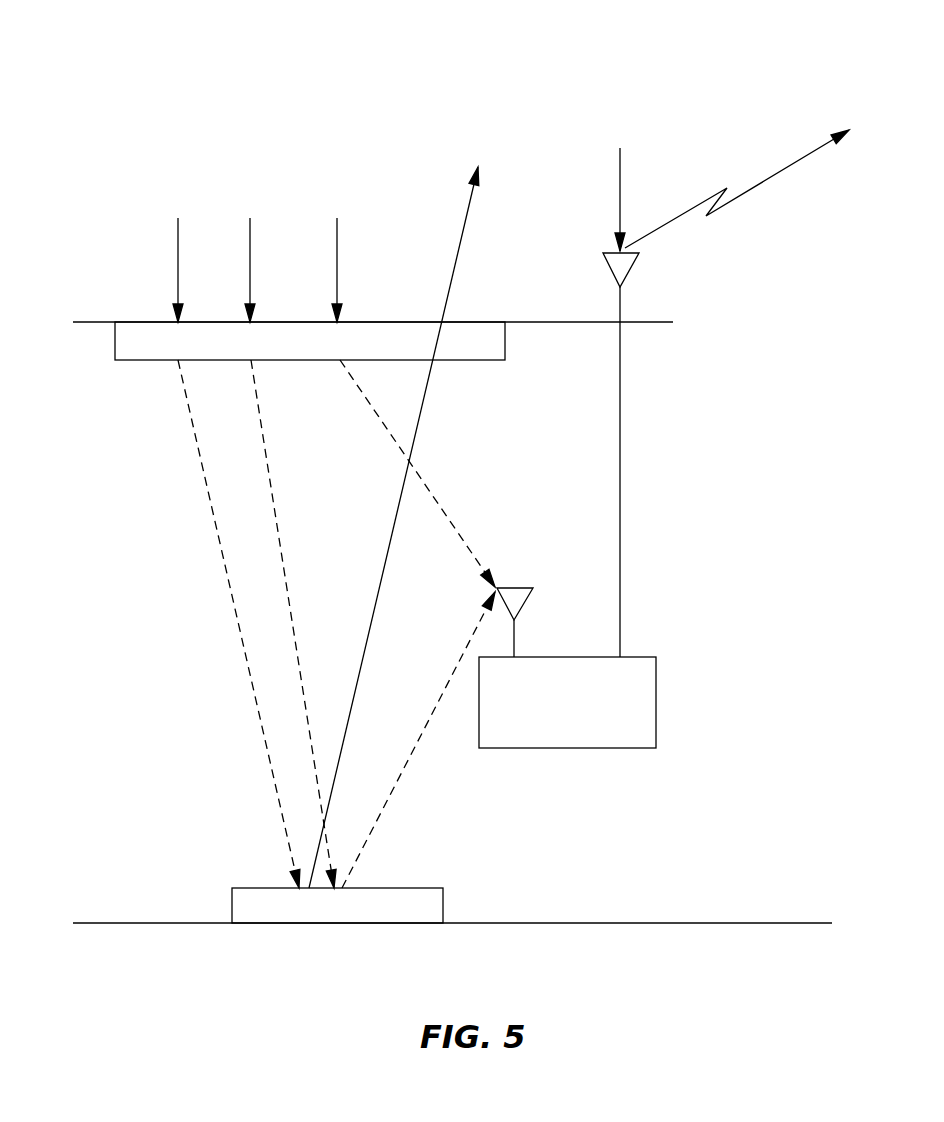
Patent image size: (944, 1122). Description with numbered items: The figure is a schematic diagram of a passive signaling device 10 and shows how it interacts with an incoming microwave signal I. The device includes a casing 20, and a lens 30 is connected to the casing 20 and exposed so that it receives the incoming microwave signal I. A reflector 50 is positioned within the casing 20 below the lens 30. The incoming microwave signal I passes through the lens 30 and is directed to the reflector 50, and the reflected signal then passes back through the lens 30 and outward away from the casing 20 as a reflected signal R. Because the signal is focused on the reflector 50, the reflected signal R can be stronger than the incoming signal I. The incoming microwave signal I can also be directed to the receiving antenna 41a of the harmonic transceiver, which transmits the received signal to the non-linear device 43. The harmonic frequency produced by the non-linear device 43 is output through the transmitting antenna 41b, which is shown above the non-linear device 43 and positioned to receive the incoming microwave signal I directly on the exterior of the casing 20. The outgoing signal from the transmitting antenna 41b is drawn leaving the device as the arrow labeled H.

The signaling device 10 is at (236, 118).
The casing 20 is at (605, 923).
The lens 30 is at (373, 341).
The receiving antenna 41a is at (517, 598).
The transmitting antenna 41b is at (627, 267).
The non-linear device 43 is at (567, 702).
The reflector 50 is at (337, 905).
The incoming microwave signal I is at (178, 247).
The reflected signal R is at (466, 228).
The ambient light H is at (790, 167).